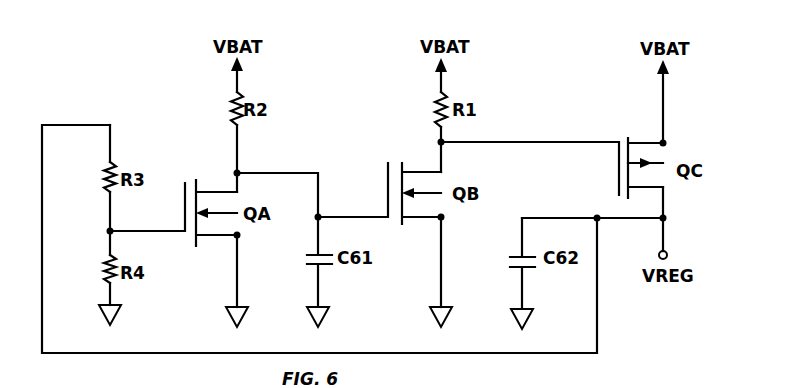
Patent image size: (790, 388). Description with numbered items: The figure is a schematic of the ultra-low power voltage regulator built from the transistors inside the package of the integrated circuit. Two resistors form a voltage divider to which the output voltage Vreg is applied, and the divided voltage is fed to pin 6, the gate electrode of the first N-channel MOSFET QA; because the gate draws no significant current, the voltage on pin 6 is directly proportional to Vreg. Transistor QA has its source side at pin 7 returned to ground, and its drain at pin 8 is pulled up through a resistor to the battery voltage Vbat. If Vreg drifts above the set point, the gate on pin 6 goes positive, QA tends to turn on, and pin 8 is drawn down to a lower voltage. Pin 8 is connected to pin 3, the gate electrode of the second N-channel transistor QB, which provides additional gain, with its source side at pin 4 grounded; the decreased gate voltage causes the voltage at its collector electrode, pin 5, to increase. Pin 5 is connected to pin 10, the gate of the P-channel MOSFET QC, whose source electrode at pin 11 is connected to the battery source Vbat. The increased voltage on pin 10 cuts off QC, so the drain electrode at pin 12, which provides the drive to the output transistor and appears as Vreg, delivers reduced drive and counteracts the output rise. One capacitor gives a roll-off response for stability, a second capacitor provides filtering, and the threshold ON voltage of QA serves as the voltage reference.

The pin 3 of IC U2 3 is at (352, 192).
The pin 4 of IC U2 4 is at (445, 272).
The pin 5 of IC U2 5 is at (448, 150).
The pin 6 of IC U2 6 is at (146, 209).
The pin 7 of IC U2 7 is at (239, 281).
The pin 8 of IC U2 8 is at (276, 171).
The pin 10 of IC U2 10 is at (530, 157).
The pin 11 of IC U2 11 is at (679, 108).
The pin 12 of IC U2 12 is at (611, 204).